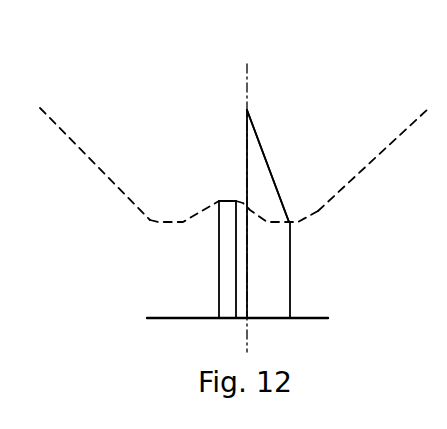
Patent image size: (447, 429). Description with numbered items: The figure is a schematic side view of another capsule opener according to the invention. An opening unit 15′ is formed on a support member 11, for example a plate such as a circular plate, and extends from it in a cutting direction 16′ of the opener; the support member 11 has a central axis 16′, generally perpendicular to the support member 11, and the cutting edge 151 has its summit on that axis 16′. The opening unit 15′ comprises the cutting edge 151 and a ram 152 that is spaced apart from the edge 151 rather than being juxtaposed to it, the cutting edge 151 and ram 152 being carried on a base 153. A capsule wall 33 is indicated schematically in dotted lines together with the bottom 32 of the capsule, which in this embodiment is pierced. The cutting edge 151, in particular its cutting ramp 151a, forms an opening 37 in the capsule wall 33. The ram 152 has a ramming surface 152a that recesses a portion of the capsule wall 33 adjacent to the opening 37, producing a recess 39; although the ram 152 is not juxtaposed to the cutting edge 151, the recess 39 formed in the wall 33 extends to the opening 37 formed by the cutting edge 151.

The support member 11 is at (320, 317).
The opening unit 15′ is at (158, 121).
The cutting direction 16′ is at (247, 75).
The bottom of the capsule 32 is at (122, 193).
The capsule wall 33 is at (308, 212).
The opening 37 is at (262, 220).
The recess 39 is at (195, 214).
The cutting edge 151 is at (258, 163).
The cutting ramp 151a is at (274, 173).
The ram 152 is at (223, 286).
The ramming surface 152a is at (221, 200).
The base 153 is at (278, 305).